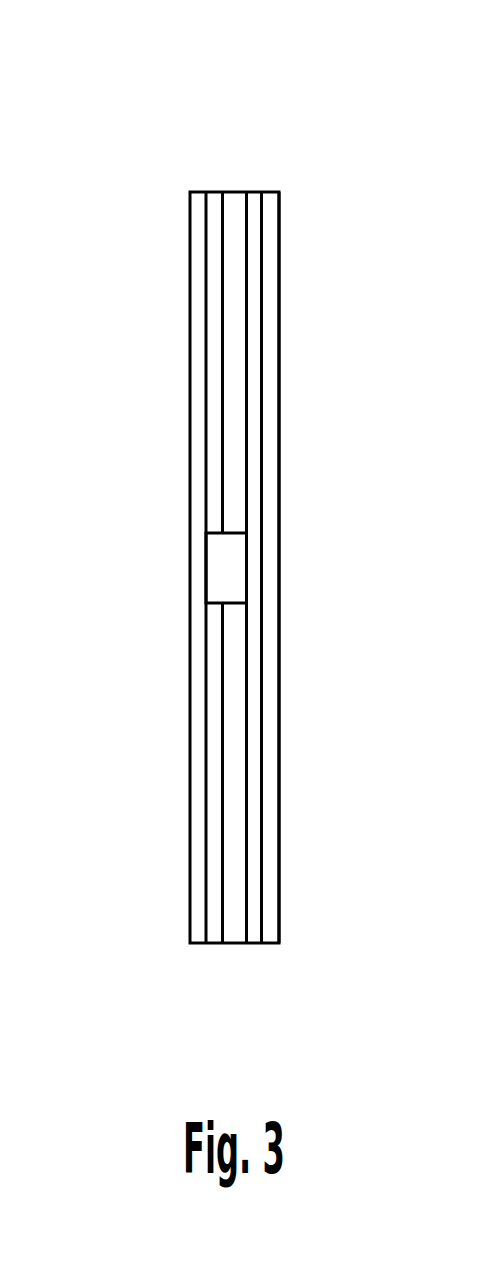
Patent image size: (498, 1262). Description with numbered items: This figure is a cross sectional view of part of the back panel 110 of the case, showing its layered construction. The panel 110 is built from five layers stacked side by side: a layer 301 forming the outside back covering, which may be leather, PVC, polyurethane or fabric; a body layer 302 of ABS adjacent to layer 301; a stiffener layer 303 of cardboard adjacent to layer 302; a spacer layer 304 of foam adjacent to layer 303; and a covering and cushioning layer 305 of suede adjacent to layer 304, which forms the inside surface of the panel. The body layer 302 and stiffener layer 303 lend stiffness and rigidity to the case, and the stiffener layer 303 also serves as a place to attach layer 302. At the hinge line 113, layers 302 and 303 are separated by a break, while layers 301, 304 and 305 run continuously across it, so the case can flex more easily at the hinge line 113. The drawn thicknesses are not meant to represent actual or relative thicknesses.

The panel 110 is at (178, 74).
The layer 301 is at (197, 287).
The layer 302 is at (213, 193).
The layer 303 is at (235, 196).
The layer 304 is at (253, 280).
The layer 305 is at (272, 465).
The hinge line 113 is at (164, 568).